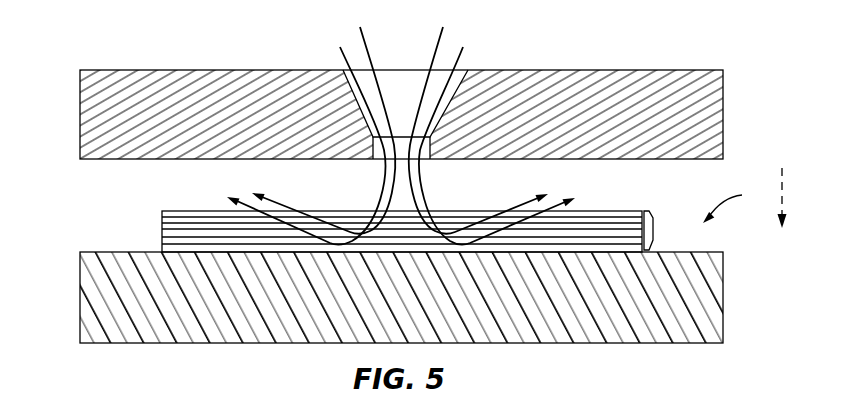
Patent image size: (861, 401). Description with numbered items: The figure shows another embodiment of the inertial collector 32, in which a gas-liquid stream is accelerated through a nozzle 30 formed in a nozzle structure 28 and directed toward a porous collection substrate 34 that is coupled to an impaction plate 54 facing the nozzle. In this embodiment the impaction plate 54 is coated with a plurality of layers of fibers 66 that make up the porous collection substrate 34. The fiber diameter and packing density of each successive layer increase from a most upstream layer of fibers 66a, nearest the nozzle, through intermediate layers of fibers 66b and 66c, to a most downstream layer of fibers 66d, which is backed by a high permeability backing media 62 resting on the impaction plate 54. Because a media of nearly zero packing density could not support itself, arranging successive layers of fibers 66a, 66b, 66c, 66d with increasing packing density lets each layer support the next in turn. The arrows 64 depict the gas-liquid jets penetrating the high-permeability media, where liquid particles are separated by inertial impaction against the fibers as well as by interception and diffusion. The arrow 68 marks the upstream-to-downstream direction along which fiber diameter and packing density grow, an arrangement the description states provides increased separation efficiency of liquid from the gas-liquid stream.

The nozzle structure 28 is at (723, 113).
The nozzle 30 is at (458, 88).
The inertial collector 32 is at (734, 202).
The porous collection substrate 34 is at (617, 211).
The impaction plate 54 is at (723, 280).
The high permeability backing media 62 is at (197, 246).
The arrows 64 is at (350, 227).
The plurality of layers of fibers 66 is at (655, 232).
The most upstream layer of fibers 66a is at (183, 211).
The second layer of fibers 66b is at (160, 223).
The third layer of fibers 66c is at (160, 230).
The most downstream layer of fibers 66d is at (160, 239).
The arrow 68 is at (785, 193).